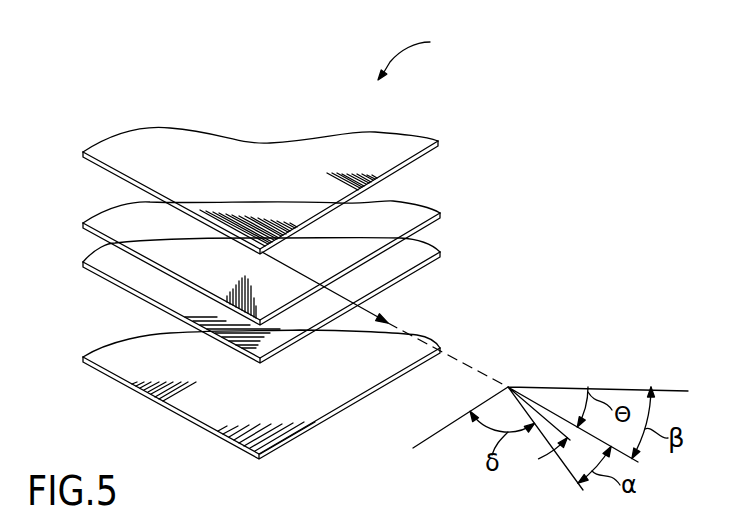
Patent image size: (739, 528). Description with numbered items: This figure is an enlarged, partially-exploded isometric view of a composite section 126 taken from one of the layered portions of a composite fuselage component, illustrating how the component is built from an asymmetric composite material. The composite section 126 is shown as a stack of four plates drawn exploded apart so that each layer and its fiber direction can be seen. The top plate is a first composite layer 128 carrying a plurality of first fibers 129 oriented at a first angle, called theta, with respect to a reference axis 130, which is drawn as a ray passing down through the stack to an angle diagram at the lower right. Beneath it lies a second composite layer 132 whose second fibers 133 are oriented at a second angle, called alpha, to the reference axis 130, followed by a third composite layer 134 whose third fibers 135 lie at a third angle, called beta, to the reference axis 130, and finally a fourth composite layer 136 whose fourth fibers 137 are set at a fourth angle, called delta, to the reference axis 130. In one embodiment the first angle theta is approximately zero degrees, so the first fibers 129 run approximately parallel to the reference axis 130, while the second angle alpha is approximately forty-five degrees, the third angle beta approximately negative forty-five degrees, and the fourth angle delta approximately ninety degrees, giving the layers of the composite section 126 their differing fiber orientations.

The composite section 126 is at (428, 54).
The first composite layer 128 is at (402, 148).
The first fibers 129 is at (237, 217).
The reference axis 130 is at (372, 303).
The second composite layer 132 is at (403, 213).
The second fibers 133 is at (257, 316).
The third composite layer 134 is at (413, 250).
The third fibers 135 is at (220, 322).
The fourth composite layer 136 is at (416, 338).
The fourth fibers 137 is at (137, 385).